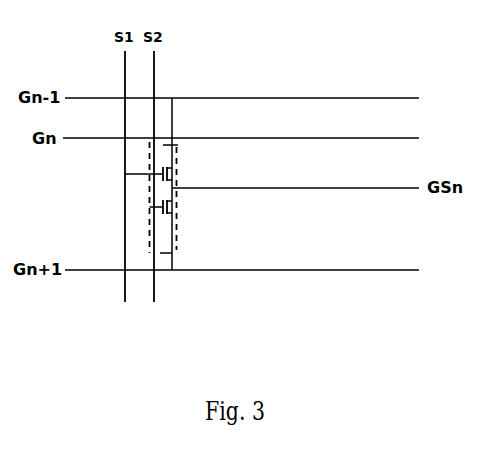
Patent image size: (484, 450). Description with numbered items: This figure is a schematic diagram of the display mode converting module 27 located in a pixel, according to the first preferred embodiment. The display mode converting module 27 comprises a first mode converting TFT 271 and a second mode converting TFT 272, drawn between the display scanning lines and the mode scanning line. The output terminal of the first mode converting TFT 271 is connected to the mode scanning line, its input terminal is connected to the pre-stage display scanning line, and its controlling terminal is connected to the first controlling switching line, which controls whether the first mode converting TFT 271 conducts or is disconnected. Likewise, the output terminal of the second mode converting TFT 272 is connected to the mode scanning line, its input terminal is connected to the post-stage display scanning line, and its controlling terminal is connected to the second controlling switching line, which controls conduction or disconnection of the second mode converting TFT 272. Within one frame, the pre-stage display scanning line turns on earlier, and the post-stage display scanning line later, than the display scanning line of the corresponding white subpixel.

The display mode converting module 27 is at (150, 190).
The first mode converting TFT 271 is at (169, 167).
The second mode converting TFT 272 is at (182, 211).